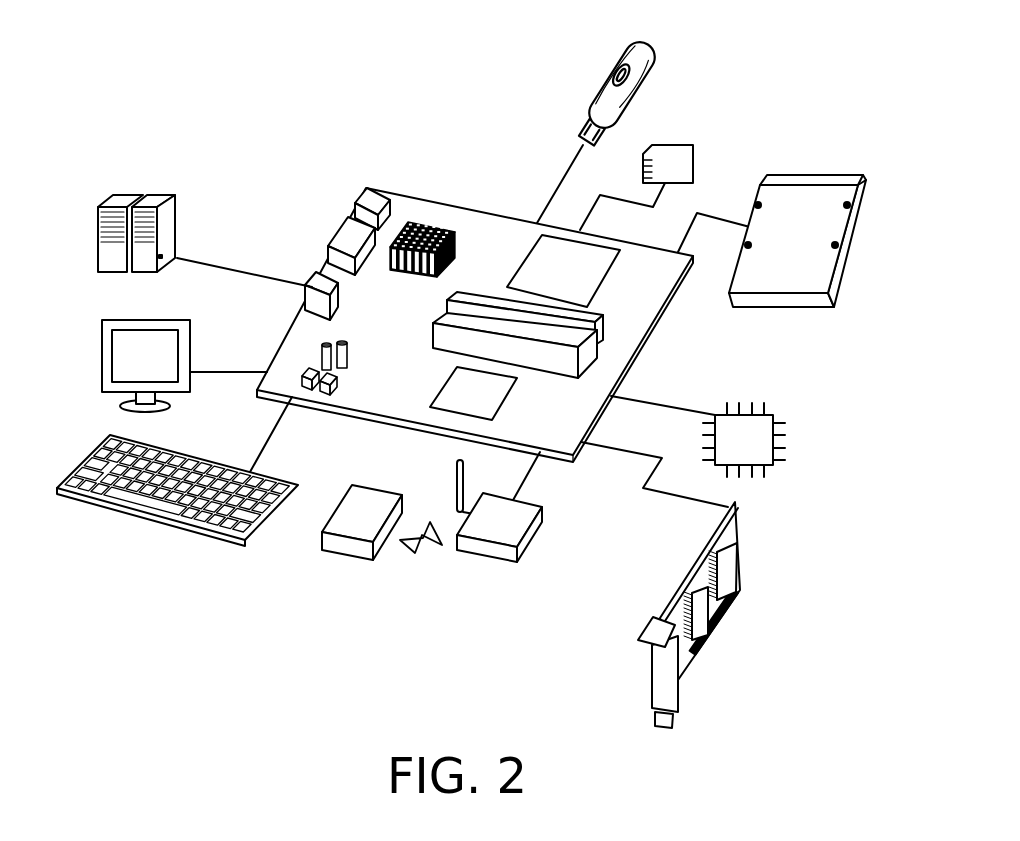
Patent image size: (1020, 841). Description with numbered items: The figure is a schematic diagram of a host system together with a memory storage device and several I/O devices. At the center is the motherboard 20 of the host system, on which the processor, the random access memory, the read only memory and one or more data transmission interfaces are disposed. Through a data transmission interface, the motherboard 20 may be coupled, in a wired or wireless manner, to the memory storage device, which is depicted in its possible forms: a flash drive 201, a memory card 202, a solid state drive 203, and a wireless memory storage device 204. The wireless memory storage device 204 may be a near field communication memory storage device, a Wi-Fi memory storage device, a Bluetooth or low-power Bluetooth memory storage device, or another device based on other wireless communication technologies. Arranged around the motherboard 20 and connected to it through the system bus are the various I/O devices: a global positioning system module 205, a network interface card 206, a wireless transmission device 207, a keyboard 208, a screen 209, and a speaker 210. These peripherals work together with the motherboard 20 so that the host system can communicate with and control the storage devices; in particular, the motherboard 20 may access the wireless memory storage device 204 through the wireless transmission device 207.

The motherboard 20 is at (477, 230).
The flash drive 201 is at (600, 84).
The memory card 202 is at (697, 153).
The solid state drive 203 is at (816, 172).
The wireless memory storage device 204 is at (337, 497).
The global positioning system module 205 is at (786, 435).
The network interface card 206 is at (740, 560).
The wireless transmission device 207 is at (545, 538).
The keyboard 208 is at (180, 527).
The screen 209 is at (102, 372).
The speaker 210 is at (97, 258).